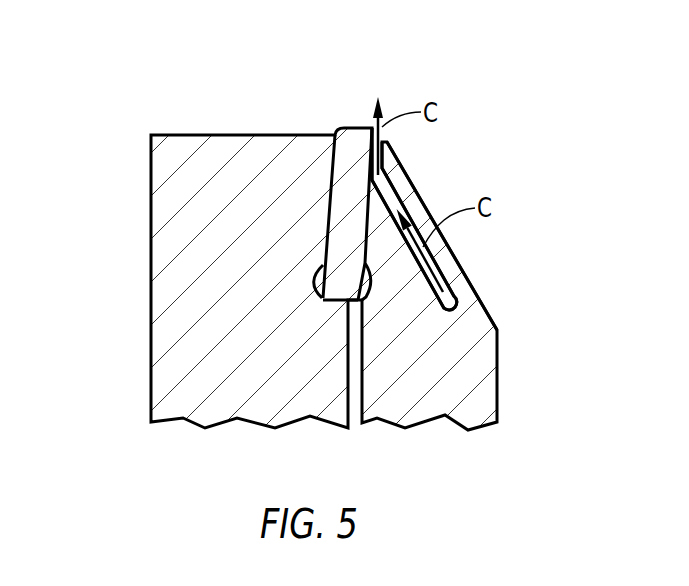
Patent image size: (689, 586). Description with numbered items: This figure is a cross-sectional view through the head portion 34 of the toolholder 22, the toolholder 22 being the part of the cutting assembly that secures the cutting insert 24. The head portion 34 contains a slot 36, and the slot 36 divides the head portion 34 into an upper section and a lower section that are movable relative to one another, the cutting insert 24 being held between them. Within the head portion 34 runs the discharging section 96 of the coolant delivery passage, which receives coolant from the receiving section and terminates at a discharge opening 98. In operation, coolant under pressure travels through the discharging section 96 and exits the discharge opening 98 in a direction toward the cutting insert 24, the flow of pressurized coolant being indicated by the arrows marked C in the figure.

The toolholder 22 is at (152, 90).
The cutting insert 24 is at (356, 145).
The head portion 34 is at (150, 313).
The slot 36 is at (353, 378).
The discharging section 96 is at (453, 264).
The discharge opening 98 is at (385, 193).